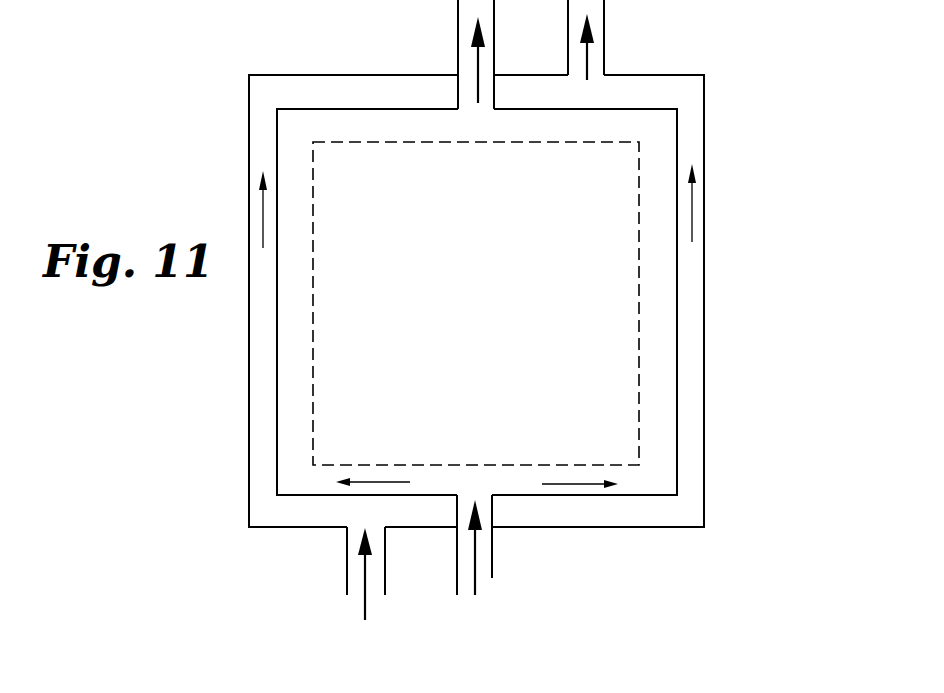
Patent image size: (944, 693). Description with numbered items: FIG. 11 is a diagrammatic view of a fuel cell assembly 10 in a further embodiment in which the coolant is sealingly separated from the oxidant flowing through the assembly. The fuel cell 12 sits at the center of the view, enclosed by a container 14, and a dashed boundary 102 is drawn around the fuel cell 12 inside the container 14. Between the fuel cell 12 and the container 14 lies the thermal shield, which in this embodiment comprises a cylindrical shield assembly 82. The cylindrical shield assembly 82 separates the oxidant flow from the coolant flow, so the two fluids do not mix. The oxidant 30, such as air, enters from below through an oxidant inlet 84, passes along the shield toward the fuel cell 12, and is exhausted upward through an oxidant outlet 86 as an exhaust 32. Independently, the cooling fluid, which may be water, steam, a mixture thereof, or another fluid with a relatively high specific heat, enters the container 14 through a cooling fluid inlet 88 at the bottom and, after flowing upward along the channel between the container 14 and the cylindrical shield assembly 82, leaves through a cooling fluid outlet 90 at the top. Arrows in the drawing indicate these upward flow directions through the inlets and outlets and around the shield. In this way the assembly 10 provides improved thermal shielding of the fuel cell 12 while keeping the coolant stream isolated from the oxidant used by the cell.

The heat exchanger apparatus 10 is at (483, 301).
The fuel cell 12 is at (471, 308).
The container 14 is at (704, 308).
The oxidant 30 is at (476, 578).
The exhaust 32 is at (478, 58).
The cylindrical shield assembly 82 is at (277, 458).
The oxidant inlet 84 is at (492, 548).
The oxidant outlet 86 is at (458, 52).
The cooling fluid inlet 88 is at (347, 557).
The cooling fluid outlet 90 is at (604, 48).
The dashed boundary of core region 102 is at (639, 360).